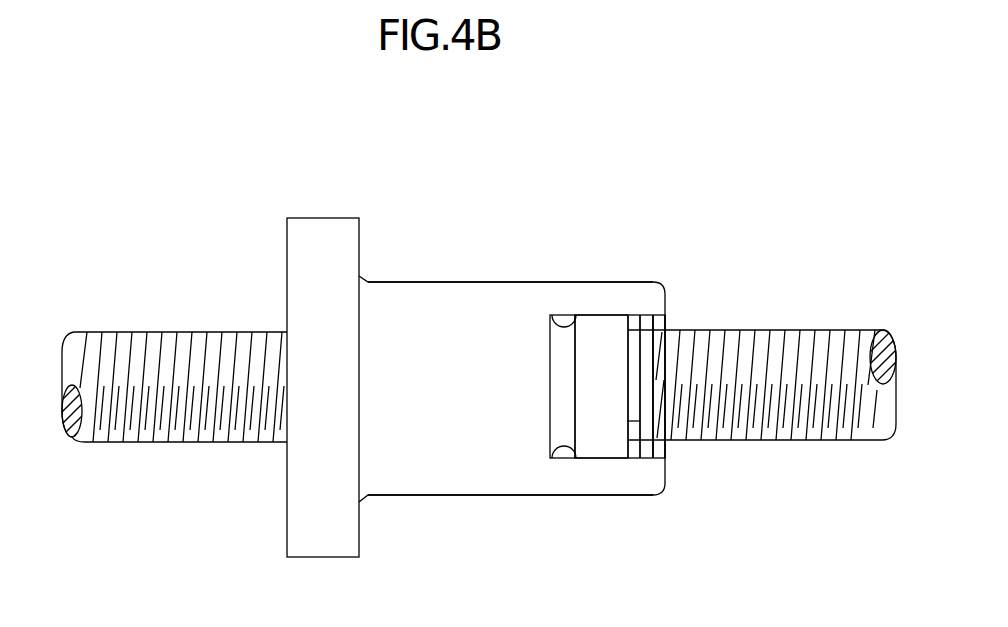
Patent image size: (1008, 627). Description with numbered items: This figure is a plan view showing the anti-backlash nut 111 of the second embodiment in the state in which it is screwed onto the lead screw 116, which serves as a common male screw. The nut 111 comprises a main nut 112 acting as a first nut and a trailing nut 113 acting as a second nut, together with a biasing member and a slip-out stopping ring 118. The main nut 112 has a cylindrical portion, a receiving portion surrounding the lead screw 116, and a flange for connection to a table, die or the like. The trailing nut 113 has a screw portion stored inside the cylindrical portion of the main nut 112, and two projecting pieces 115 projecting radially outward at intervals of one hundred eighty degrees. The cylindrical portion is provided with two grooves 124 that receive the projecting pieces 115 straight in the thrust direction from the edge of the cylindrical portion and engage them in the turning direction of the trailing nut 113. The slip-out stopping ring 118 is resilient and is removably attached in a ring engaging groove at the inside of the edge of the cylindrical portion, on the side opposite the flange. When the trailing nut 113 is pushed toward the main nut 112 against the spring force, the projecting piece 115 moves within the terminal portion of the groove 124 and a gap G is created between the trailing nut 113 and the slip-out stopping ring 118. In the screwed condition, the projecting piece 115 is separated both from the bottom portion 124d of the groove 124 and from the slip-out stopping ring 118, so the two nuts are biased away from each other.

The nut 111 is at (531, 155).
The main nut 112 is at (369, 278).
The trailing nut 113 is at (620, 314).
The projecting piece 115 is at (593, 450).
The lead screw 116 is at (128, 331).
The slip-out stopping ring 118 is at (648, 324).
The groove 124 is at (553, 316).
The bottom portion 124d is at (581, 452).
The gap G is at (642, 425).